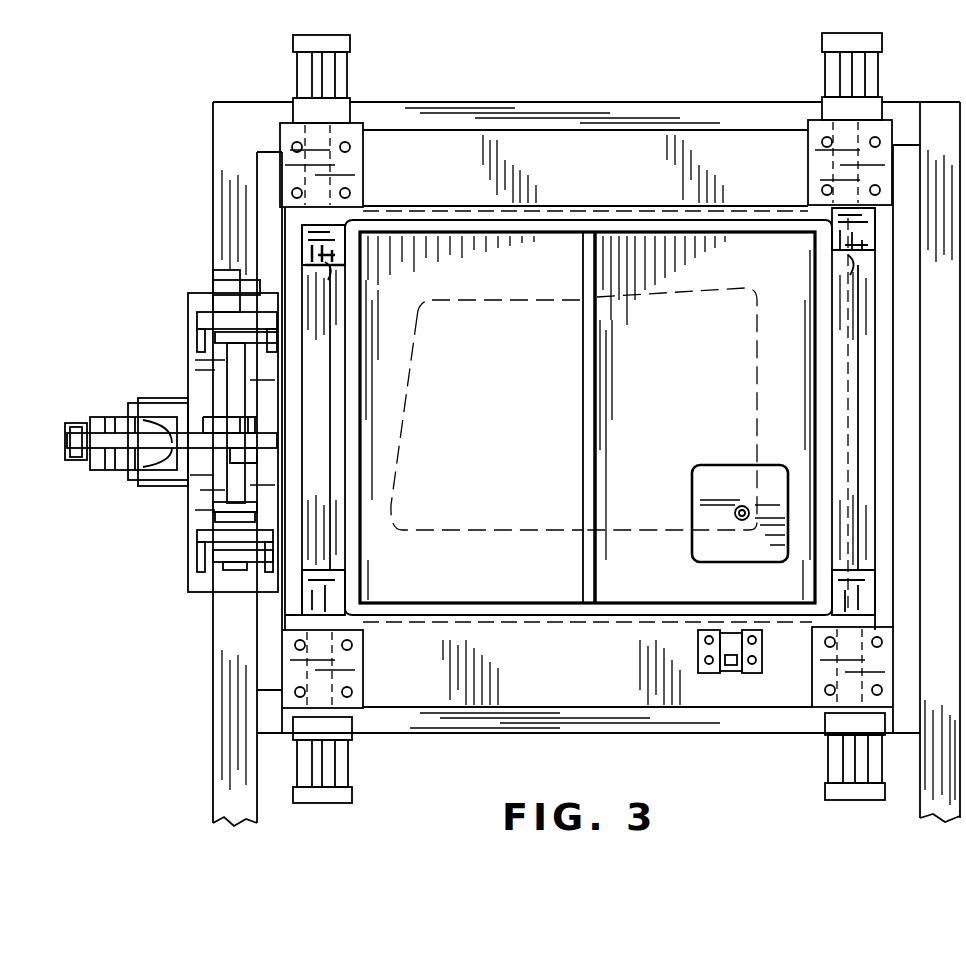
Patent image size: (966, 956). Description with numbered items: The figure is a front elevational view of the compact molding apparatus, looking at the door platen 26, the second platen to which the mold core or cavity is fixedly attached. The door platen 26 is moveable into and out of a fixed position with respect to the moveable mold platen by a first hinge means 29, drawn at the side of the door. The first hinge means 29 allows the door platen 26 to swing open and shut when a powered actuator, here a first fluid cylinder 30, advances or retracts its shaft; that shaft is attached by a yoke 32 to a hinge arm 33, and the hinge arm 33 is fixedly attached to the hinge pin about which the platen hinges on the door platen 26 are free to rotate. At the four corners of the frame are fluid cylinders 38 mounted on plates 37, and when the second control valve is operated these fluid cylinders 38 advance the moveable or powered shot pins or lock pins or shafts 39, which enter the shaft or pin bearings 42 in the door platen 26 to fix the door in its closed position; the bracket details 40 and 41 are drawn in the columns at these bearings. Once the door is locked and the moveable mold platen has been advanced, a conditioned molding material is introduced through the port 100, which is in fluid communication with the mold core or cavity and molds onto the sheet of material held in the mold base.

The door platen 26 is at (523, 607).
The first hinge means 29 is at (214, 385).
The first fluid cylinder 30 is at (125, 425).
The yoke 32 is at (66, 452).
The hinge arm 33 is at (118, 448).
The mounting plate 37 is at (362, 167).
The fluid cylinders 38 is at (350, 72).
The shot pins or lock pins or shafts 39 is at (362, 182).
The lower guide bracket 40 is at (335, 262).
The guide bracket body 41 is at (325, 252).
The shaft or pin bearings 42 is at (318, 245).
The port 100 is at (734, 513).